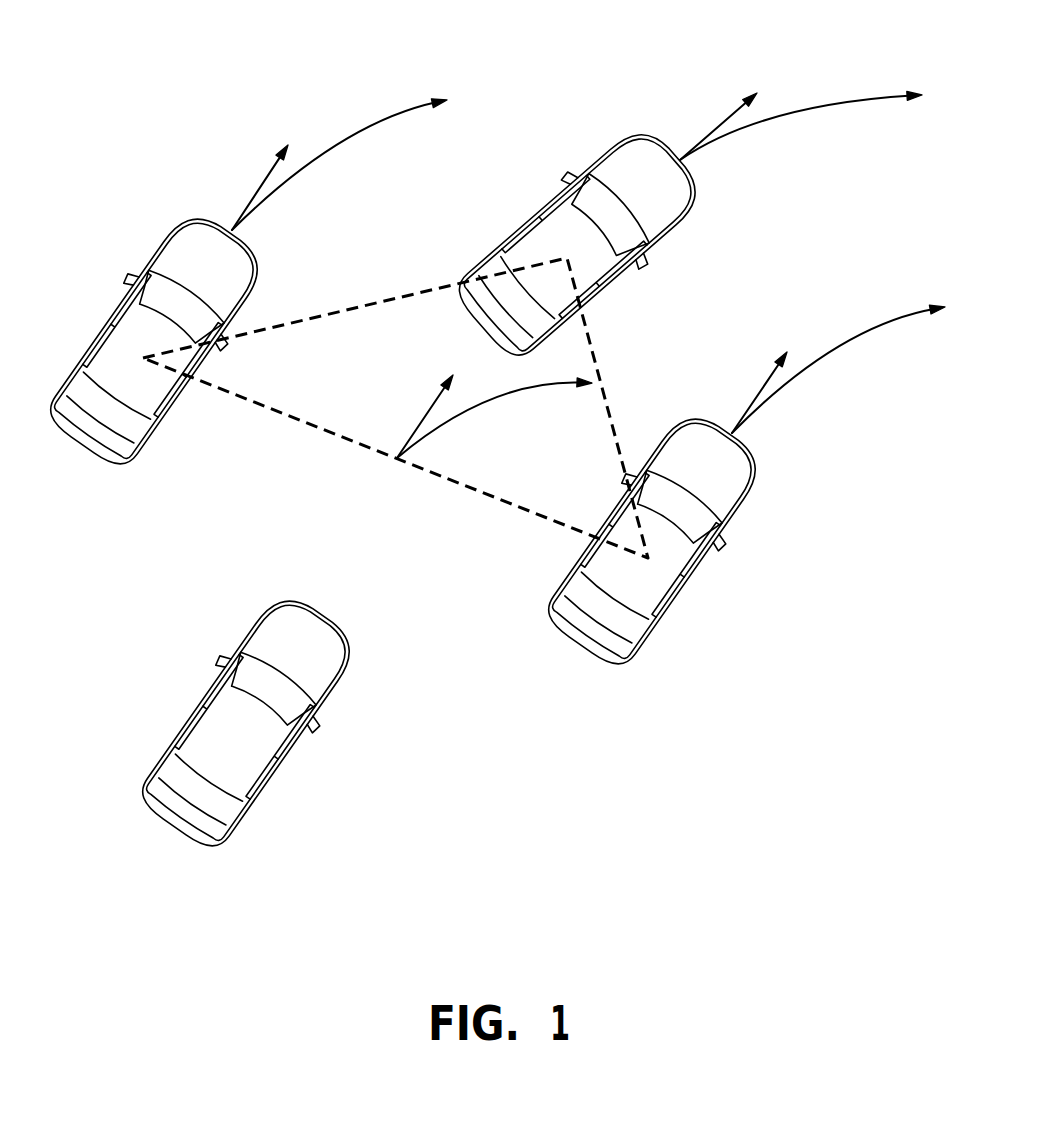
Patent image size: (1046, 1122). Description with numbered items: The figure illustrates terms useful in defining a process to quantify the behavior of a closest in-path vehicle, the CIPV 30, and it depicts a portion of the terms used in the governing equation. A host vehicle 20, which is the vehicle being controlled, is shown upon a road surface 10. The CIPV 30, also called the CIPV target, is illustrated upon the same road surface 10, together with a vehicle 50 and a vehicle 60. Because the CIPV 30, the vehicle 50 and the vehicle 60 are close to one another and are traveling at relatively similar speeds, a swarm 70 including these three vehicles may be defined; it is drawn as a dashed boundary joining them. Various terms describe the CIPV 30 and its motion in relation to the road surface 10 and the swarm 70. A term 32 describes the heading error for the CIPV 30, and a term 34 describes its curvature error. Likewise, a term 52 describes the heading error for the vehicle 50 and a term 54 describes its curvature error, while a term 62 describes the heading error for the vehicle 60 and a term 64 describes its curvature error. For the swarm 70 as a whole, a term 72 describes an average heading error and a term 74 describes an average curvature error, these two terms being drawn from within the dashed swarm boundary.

The road surface 10 is at (482, 698).
The host vehicle 20 is at (243, 747).
The CIPV 30 is at (645, 226).
The heading error term for the CIPV 32 is at (718, 125).
The curvature error term for the CIPV 34 is at (798, 110).
The vehicle 50 is at (140, 330).
The heading error term for the vehicle 52 is at (253, 193).
The curvature error term for the vehicle 54 is at (365, 128).
The vehicle 60 is at (673, 560).
The heading error term for the vehicle 62 is at (755, 397).
The curvature error term for the vehicle 64 is at (862, 338).
The swarm 70 is at (273, 410).
The average heading error term for the swarm 72 is at (420, 418).
The average curvature error term for the swarm 74 is at (472, 408).